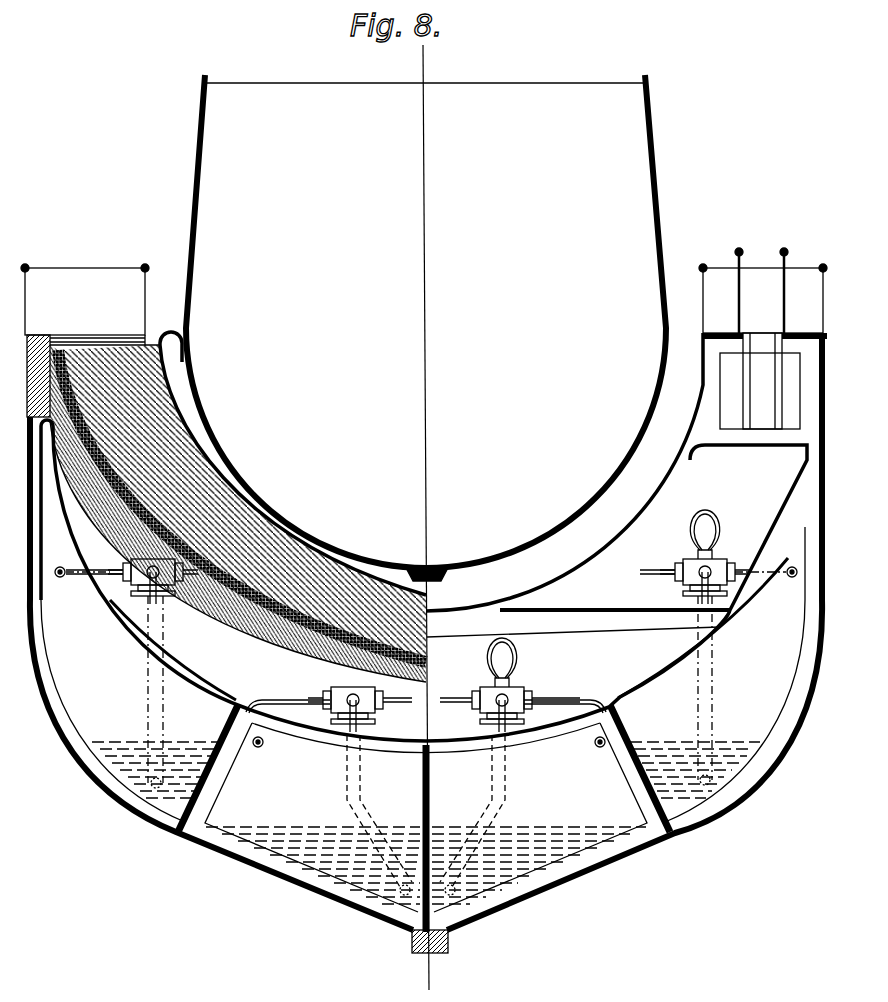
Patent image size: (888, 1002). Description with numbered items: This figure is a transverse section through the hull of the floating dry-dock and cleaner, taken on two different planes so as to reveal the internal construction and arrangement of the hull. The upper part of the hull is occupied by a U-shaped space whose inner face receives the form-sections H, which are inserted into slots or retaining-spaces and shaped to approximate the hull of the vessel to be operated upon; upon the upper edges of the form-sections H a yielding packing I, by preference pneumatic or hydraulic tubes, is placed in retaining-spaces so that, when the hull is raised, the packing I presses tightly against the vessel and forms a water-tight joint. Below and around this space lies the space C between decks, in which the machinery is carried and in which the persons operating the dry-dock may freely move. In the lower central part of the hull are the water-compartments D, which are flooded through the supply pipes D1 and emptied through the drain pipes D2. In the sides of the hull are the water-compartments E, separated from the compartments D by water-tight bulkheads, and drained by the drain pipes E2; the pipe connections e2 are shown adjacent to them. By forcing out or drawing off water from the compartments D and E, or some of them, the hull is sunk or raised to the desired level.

The yielding packing I is at (173, 338).
The form-sections H is at (314, 508).
The space between decks C is at (424, 580).
The water-compartments E is at (426, 631).
The drain pipes E2 is at (792, 578).
The pipe connections e2 is at (630, 718).
The water-compartments D is at (424, 829).
The supply pipes D1 is at (605, 760).
The drain pipes D2 is at (363, 776).